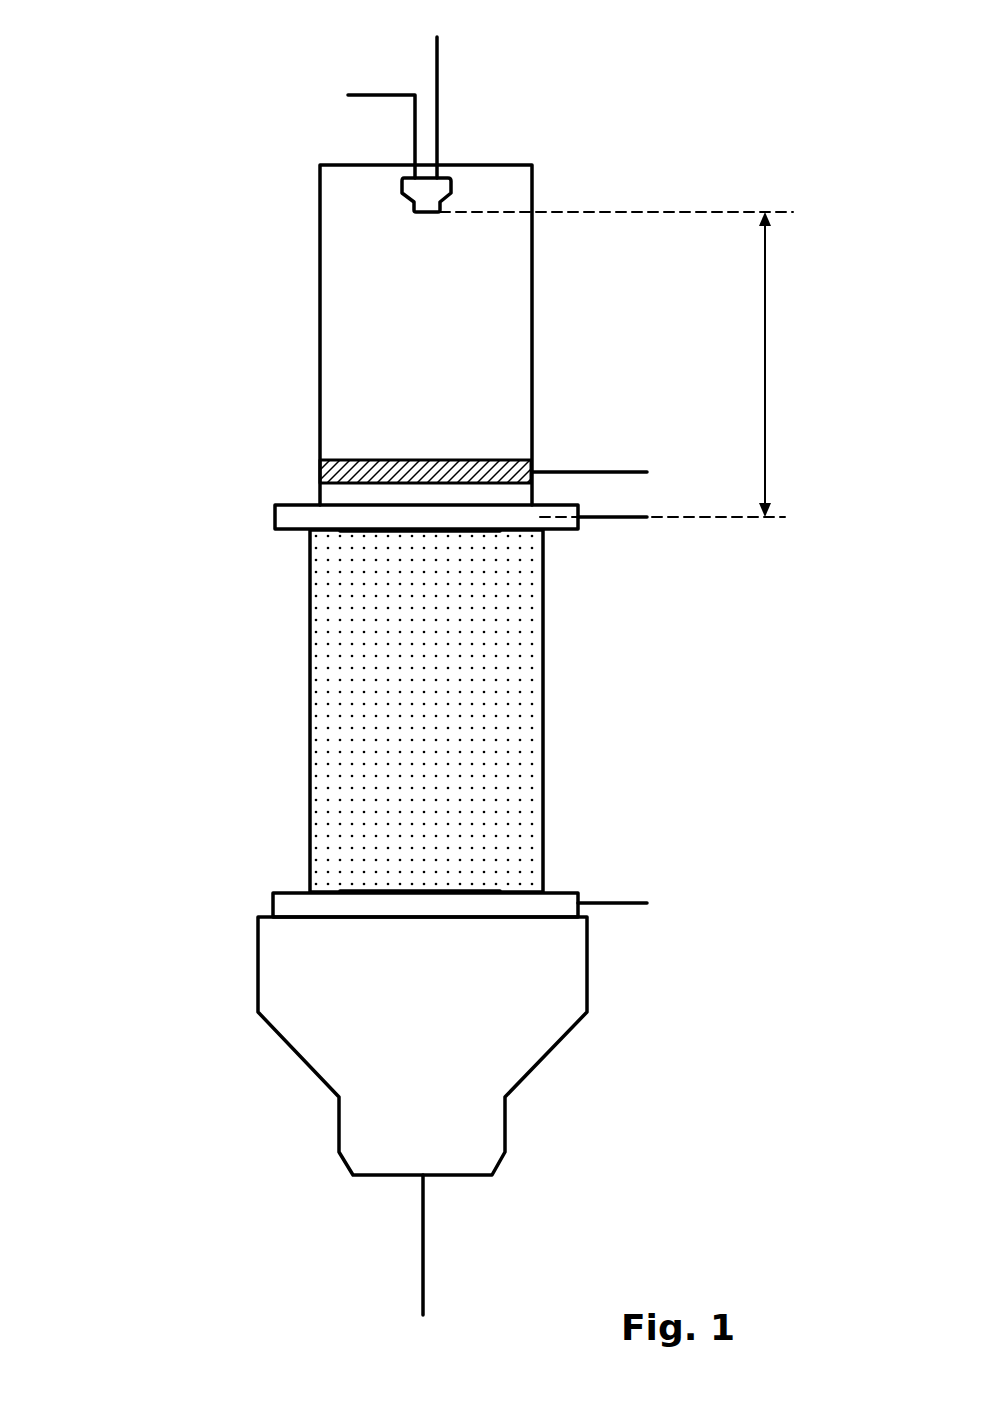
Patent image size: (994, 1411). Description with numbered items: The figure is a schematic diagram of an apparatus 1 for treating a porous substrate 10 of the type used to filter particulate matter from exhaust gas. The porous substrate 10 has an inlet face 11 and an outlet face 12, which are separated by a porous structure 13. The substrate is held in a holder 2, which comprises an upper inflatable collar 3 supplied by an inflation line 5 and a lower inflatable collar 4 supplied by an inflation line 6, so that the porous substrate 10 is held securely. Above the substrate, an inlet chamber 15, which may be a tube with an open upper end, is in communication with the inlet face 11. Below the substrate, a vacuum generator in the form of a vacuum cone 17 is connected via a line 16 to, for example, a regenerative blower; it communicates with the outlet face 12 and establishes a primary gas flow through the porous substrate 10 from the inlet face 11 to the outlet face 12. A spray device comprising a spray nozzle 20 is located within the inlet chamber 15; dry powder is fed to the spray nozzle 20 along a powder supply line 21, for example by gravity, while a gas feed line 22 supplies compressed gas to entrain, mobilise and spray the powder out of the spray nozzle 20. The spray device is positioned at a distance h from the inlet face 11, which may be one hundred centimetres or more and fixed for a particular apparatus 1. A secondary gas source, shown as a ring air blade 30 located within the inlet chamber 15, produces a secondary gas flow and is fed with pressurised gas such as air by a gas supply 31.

The apparatus 1 is at (730, 68).
The holder 2 is at (200, 590).
The upper inflatable collar 3 is at (280, 512).
The lower inflatable collar 4 is at (280, 903).
The inflation line 5 is at (628, 522).
The inflation line 6 is at (632, 910).
The porous substrate 10 is at (508, 753).
The inlet face 11 is at (386, 543).
The outlet face 12 is at (370, 878).
The porous structure 13 is at (490, 662).
The inlet chamber 15 is at (363, 355).
The line 16 is at (425, 1290).
The vacuum cone 17 is at (507, 1042).
The spray nozzle 20 is at (427, 192).
The powder supply line 21 is at (443, 55).
The gas feed line 22 is at (348, 95).
The ring air blade 30 is at (470, 470).
The gas supply 31 is at (632, 470).
The distance h is at (623, 364).